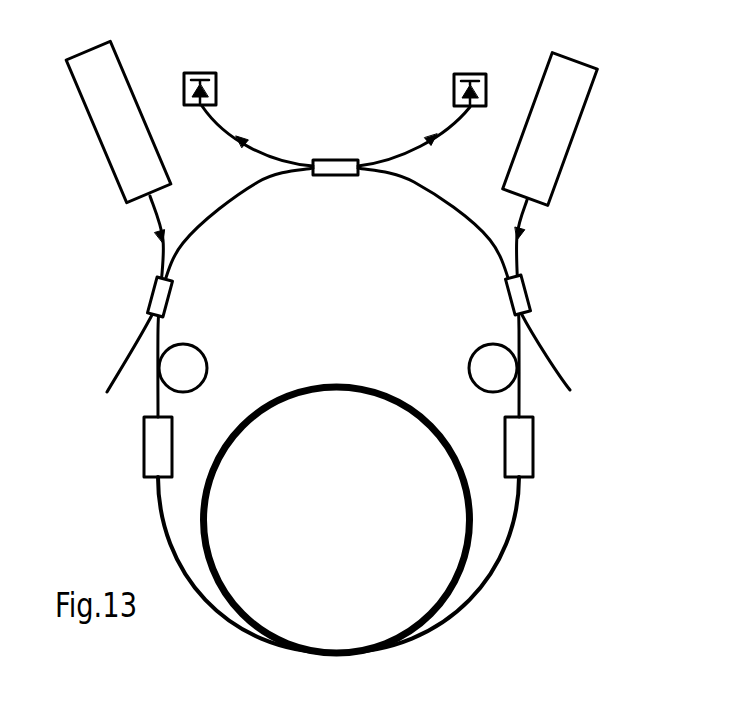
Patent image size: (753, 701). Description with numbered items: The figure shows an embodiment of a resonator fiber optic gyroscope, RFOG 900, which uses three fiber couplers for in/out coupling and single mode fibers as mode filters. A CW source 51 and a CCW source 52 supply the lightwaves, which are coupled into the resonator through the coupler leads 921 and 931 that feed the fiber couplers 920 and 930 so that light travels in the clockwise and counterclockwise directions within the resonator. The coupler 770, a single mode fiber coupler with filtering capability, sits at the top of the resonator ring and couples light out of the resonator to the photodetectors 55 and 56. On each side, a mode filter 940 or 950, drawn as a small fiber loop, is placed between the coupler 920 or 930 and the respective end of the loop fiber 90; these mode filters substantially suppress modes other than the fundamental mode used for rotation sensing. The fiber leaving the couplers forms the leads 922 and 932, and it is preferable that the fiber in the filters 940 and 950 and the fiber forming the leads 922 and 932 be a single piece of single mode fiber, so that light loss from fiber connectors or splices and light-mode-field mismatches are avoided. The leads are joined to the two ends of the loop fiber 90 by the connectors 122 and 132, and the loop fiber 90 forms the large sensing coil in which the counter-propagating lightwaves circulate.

The RFOG 900 is at (660, 75).
The light source 52 is at (103, 155).
The light source 51 is at (570, 145).
The photodetector 55 is at (217, 83).
The photodetector 56 is at (453, 83).
The coupler 770 is at (331, 177).
The coupler lead 931 is at (162, 242).
The coupler 930 is at (152, 295).
The lead 932 is at (185, 243).
The coupler lead 921 is at (517, 242).
The coupler 920 is at (527, 290).
The lead 922 is at (488, 238).
The mode filter 950 is at (208, 362).
The mode filter 940 is at (468, 355).
The connector 122 is at (143, 448).
The connector 132 is at (533, 448).
The loop fiber 90 is at (395, 403).